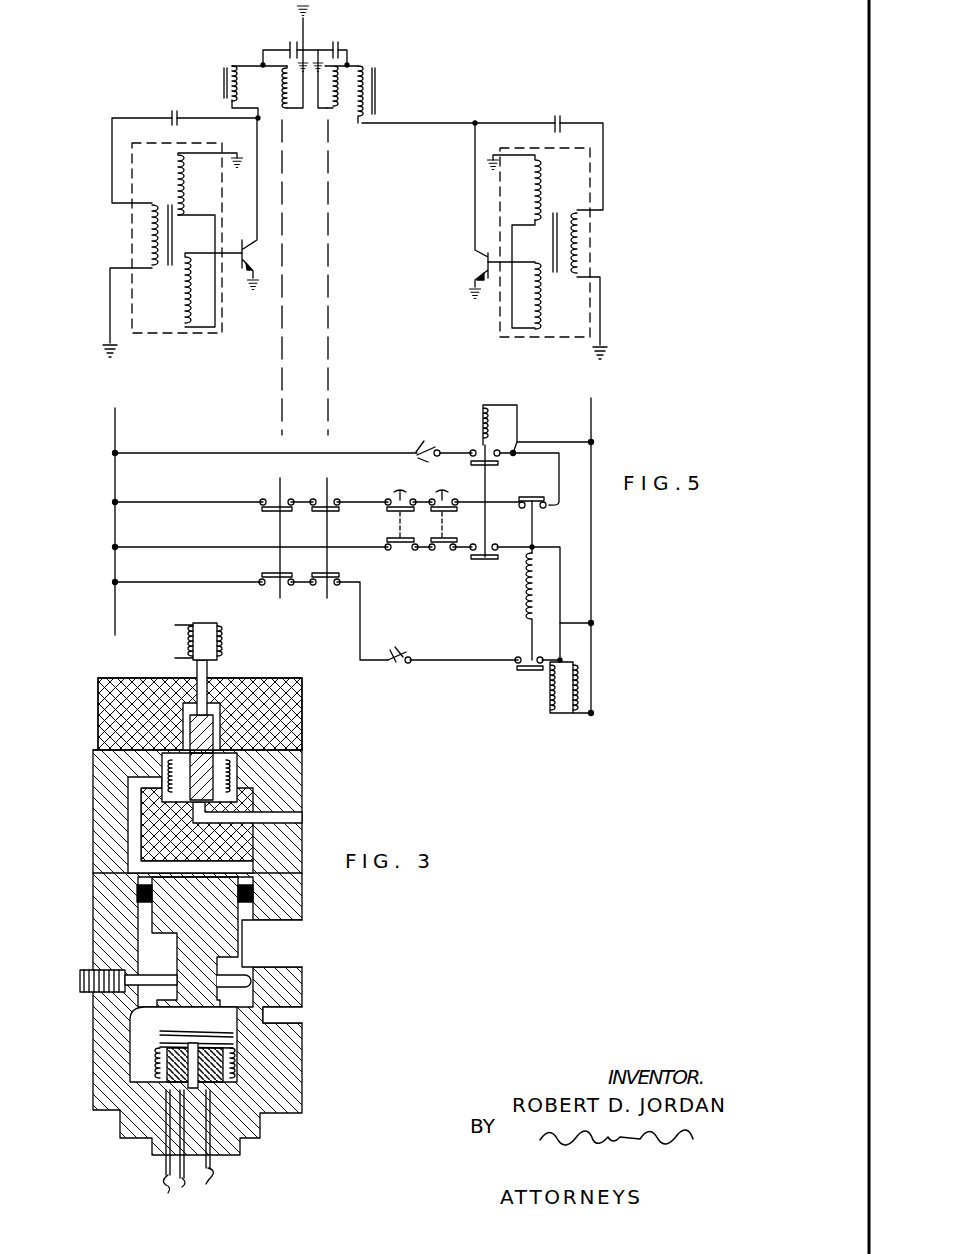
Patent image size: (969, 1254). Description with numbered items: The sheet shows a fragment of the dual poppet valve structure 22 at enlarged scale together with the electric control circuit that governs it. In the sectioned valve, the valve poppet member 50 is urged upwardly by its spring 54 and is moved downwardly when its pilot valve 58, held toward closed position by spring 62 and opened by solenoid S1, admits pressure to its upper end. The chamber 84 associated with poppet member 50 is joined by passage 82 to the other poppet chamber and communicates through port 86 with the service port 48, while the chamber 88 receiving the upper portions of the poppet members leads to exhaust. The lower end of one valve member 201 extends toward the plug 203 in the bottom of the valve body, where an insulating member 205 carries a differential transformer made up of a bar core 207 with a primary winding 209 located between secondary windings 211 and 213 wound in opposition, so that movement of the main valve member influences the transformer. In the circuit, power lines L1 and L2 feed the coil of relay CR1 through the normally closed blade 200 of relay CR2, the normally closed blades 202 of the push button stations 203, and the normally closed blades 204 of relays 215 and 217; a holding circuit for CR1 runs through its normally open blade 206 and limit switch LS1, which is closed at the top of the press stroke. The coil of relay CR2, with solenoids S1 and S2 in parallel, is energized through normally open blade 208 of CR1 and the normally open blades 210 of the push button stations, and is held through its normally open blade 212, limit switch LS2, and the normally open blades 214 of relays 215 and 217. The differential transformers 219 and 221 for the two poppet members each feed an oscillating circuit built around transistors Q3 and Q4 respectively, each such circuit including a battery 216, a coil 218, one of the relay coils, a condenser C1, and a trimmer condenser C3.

In FIG. 3, the valve structure 22 is at (62, 783).
In FIG. 3, the service port 48 is at (85, 975).
In FIG. 3, the valve poppet member 50 is at (248, 940).
In FIG. 3, the spring 54 is at (135, 1082).
In FIG. 3, the pilot valve 58 is at (215, 720).
In FIG. 3, the spring 62 is at (235, 778).
In FIG. 3, the passage 82 is at (290, 1018).
In FIG. 3, the chamber 84 is at (145, 1022).
In FIG. 3, the port 86 is at (125, 983).
In FIG. 3, the chamber 88 is at (295, 955).
In FIG. 5, the normally closed blade 200 is at (535, 507).
In FIG. 3, the valve member lower end 201 is at (250, 1012).
In FIG. 5, the normally closed blades 202 is at (432, 512).
In FIG. 5, the plug / push button stations 203 is at (441, 490).
In FIG. 3, the plug / push button stations 203 is at (120, 1125).
In FIG. 5, the normally closed blades 204 is at (320, 500).
In FIG. 3, the insulating member 205 is at (150, 1150).
In FIG. 5, the normally open blade 206 is at (480, 450).
In FIG. 5, the bar core 207 is at (145, 232).
In FIG. 3, the bar core 207 is at (230, 1052).
In FIG. 5, the normally open blade 208 is at (483, 570).
In FIG. 3, the primary winding 209 is at (226, 1066).
In FIG. 5, the normally open blades 210 is at (440, 552).
In FIG. 5, the secondary winding 211 is at (177, 185).
In FIG. 3, the secondary winding 211 is at (188, 1047).
In FIG. 5, the normally open blade 212 is at (522, 670).
In FIG. 5, the secondary winding 213 is at (180, 310).
In FIG. 3, the secondary winding 213 is at (225, 1105).
In FIG. 5, the normally open blades 214 is at (318, 588).
In FIG. 5, the relay 215 is at (285, 110).
In FIG. 5, the battery 216 is at (314, 50).
In FIG. 5, the relay 217 is at (370, 78).
In FIG. 5, the coil 218 is at (223, 80).
In FIG. 5, the differential transformer 219 is at (193, 340).
In FIG. 5, the differential transformer 221 is at (496, 338).
In FIG. 5, the condenser C1 is at (178, 93).
In FIG. 5, the trimmer condenser C3 is at (290, 47).
In FIG. 5, the transistor Q3 is at (243, 252).
In FIG. 5, the transistor Q4 is at (485, 262).
In FIG. 5, the power line L1 is at (123, 510).
In FIG. 5, the power line L2 is at (585, 546).
In FIG. 5, the relay CR1 is at (490, 420).
In FIG. 5, the relay CR2 is at (540, 610).
In FIG. 5, the limit switch LS1 is at (441, 450).
In FIG. 5, the limit switch LS2 is at (400, 664).
In FIG. 5, the solenoid S1 is at (553, 715).
In FIG. 3, the solenoid S1 is at (217, 637).
In FIG. 5, the solenoid S2 is at (585, 715).